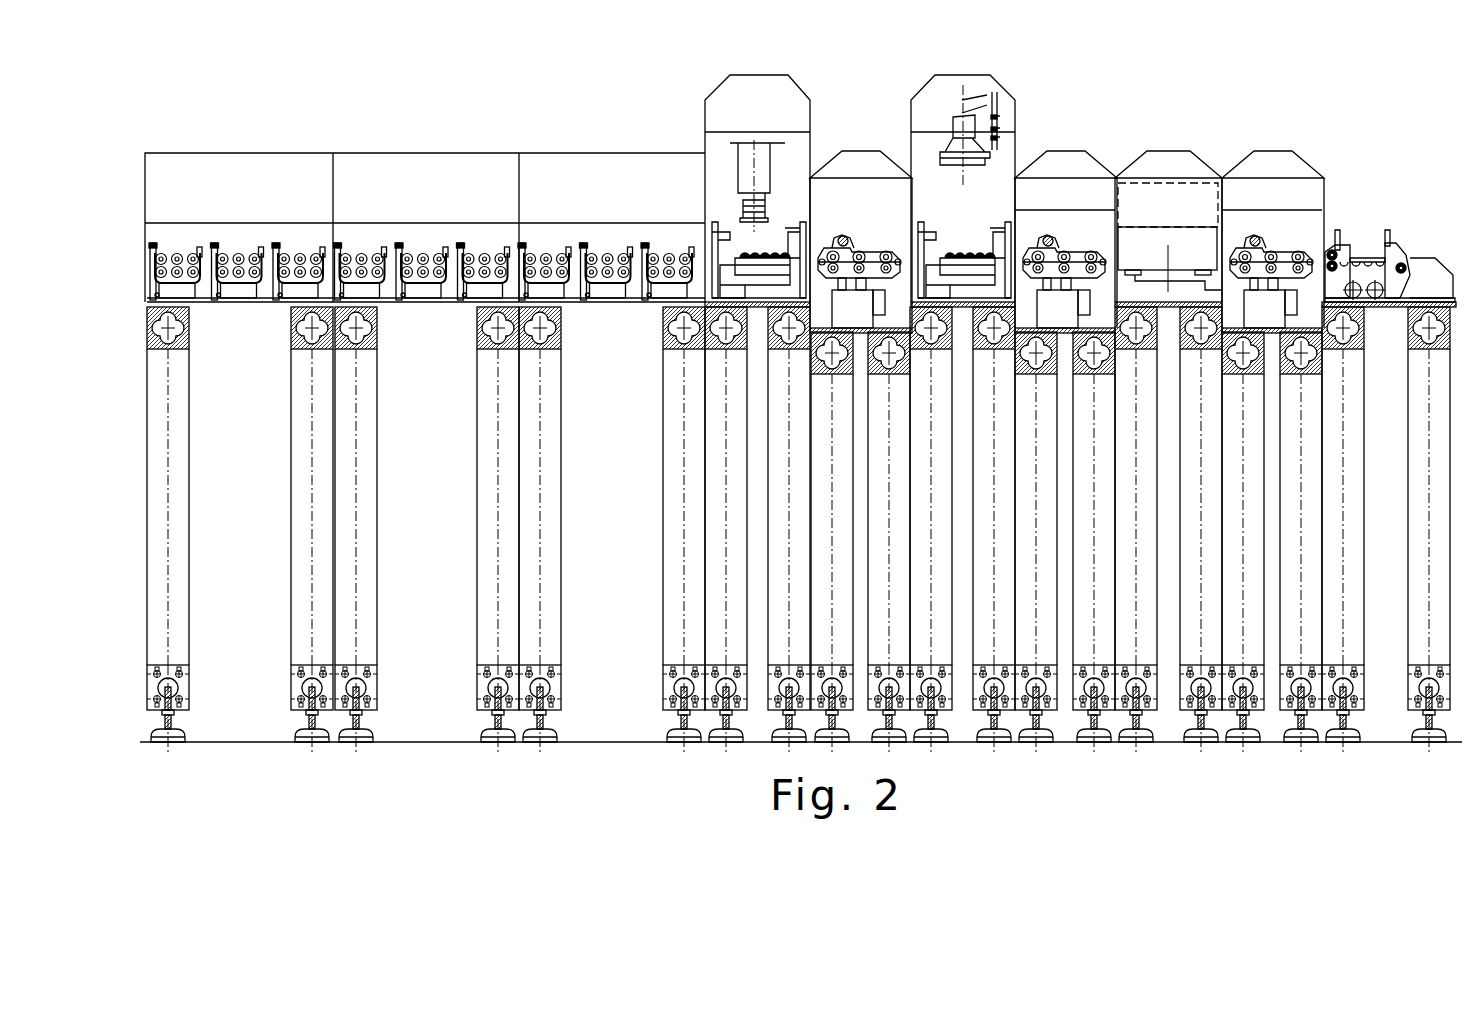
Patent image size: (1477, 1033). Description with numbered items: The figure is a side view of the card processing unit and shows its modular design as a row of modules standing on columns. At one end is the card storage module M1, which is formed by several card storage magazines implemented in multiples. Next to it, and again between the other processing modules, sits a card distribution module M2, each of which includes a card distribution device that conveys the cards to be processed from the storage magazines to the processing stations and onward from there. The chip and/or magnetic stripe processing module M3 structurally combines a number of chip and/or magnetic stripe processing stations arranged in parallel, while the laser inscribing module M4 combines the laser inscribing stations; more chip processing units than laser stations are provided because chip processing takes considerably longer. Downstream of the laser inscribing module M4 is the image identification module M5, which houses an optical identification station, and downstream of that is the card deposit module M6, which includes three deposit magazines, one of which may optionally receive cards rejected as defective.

The card storage module M1 is at (1365, 245).
The card distribution module M2 is at (857, 150).
The chip and/or magnetic stripe processing module M3 is at (1165, 150).
The laser inscribing module M4 is at (950, 75).
The image identification module M5 is at (757, 75).
The card deposit module M6 is at (241, 153).